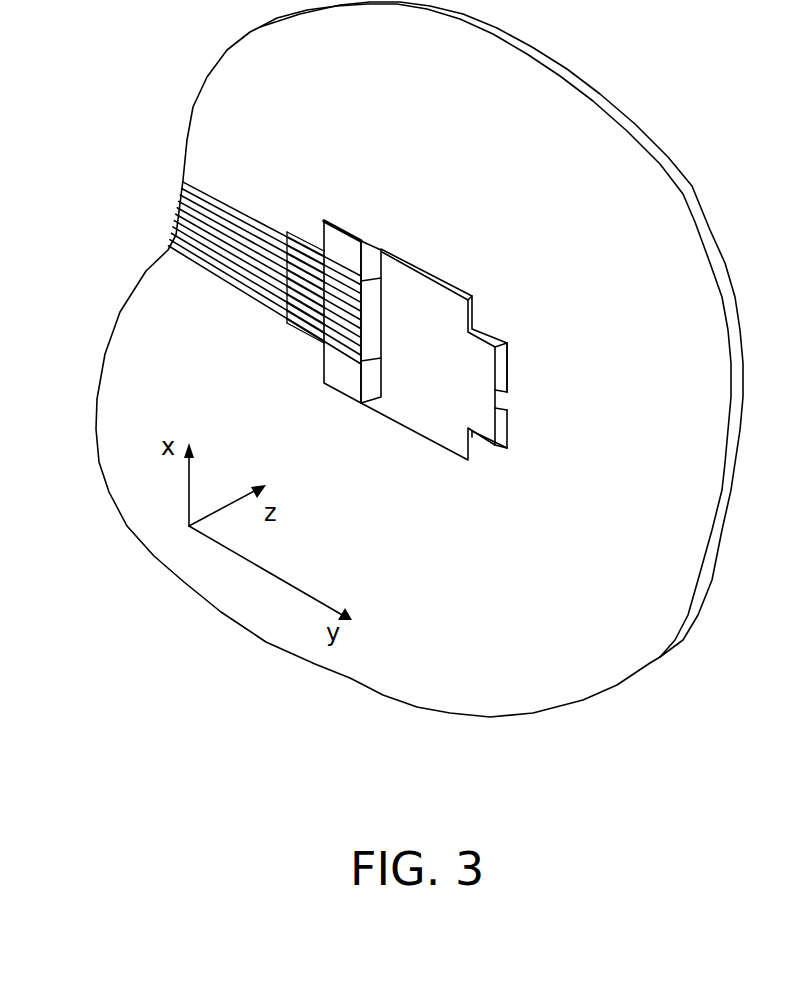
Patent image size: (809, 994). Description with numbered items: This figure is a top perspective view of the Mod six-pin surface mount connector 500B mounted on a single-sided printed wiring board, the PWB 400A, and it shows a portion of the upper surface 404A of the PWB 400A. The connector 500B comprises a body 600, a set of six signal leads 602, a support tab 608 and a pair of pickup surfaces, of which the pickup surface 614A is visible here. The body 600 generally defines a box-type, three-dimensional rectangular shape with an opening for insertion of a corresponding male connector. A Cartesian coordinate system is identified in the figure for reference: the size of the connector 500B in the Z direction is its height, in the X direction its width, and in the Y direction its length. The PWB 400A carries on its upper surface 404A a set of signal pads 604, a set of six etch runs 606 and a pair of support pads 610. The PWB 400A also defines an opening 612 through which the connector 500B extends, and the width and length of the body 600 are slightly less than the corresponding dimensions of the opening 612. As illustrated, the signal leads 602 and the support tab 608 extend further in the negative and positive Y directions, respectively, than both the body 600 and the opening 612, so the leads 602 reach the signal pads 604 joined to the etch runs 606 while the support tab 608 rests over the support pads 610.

The single-sided PWB 400A is at (660, 657).
The upper surface 404A is at (505, 648).
The Mod 6-pin connector 500B is at (490, 392).
The body 600 is at (449, 382).
The signal leads 602 is at (244, 311).
The signal pads 604 is at (308, 338).
The etch runs 606 is at (225, 205).
The support tab 608 is at (503, 400).
The support pads 610 is at (501, 337).
The opening 612 is at (396, 252).
The pickup surface 614A is at (416, 403).